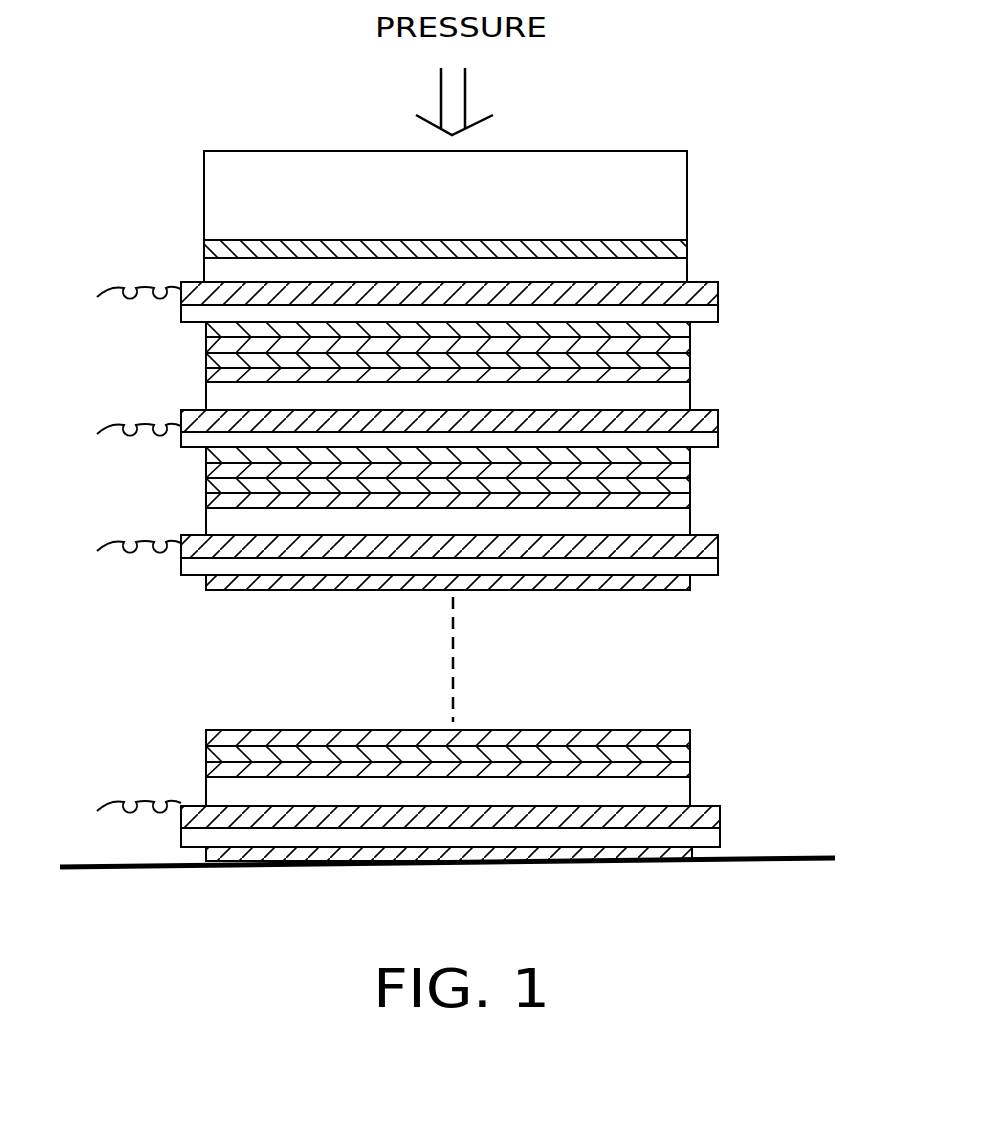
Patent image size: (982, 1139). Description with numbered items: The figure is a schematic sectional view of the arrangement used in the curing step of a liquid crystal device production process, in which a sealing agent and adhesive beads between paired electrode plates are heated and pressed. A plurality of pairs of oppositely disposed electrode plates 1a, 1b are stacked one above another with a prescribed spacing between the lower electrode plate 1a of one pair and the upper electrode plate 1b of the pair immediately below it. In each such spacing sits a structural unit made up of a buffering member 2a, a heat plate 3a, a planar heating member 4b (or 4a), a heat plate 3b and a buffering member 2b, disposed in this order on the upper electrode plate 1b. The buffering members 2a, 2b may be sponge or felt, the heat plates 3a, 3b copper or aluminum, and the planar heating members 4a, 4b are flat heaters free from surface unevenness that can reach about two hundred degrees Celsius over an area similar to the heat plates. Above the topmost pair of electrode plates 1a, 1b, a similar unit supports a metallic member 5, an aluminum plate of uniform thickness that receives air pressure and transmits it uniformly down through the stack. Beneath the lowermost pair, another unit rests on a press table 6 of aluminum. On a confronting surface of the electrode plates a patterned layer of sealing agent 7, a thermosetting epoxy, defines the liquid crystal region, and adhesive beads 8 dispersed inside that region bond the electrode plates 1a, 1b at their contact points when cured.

The lower electrode plate 1a is at (690, 360).
The upper electrode plate 1b is at (690, 345).
The buffering member 2a is at (210, 328).
The buffering member 2b is at (687, 243).
The heat plate 3a is at (718, 312).
The heat plate 3b is at (687, 268).
The planar heating member 4a is at (718, 420).
The planar heating member 4b is at (718, 291).
The metallic member 5 is at (687, 170).
The press table 6 is at (815, 857).
The sealing agent 7 is at (690, 480).
The adhesive beads 8 is at (767, 530).